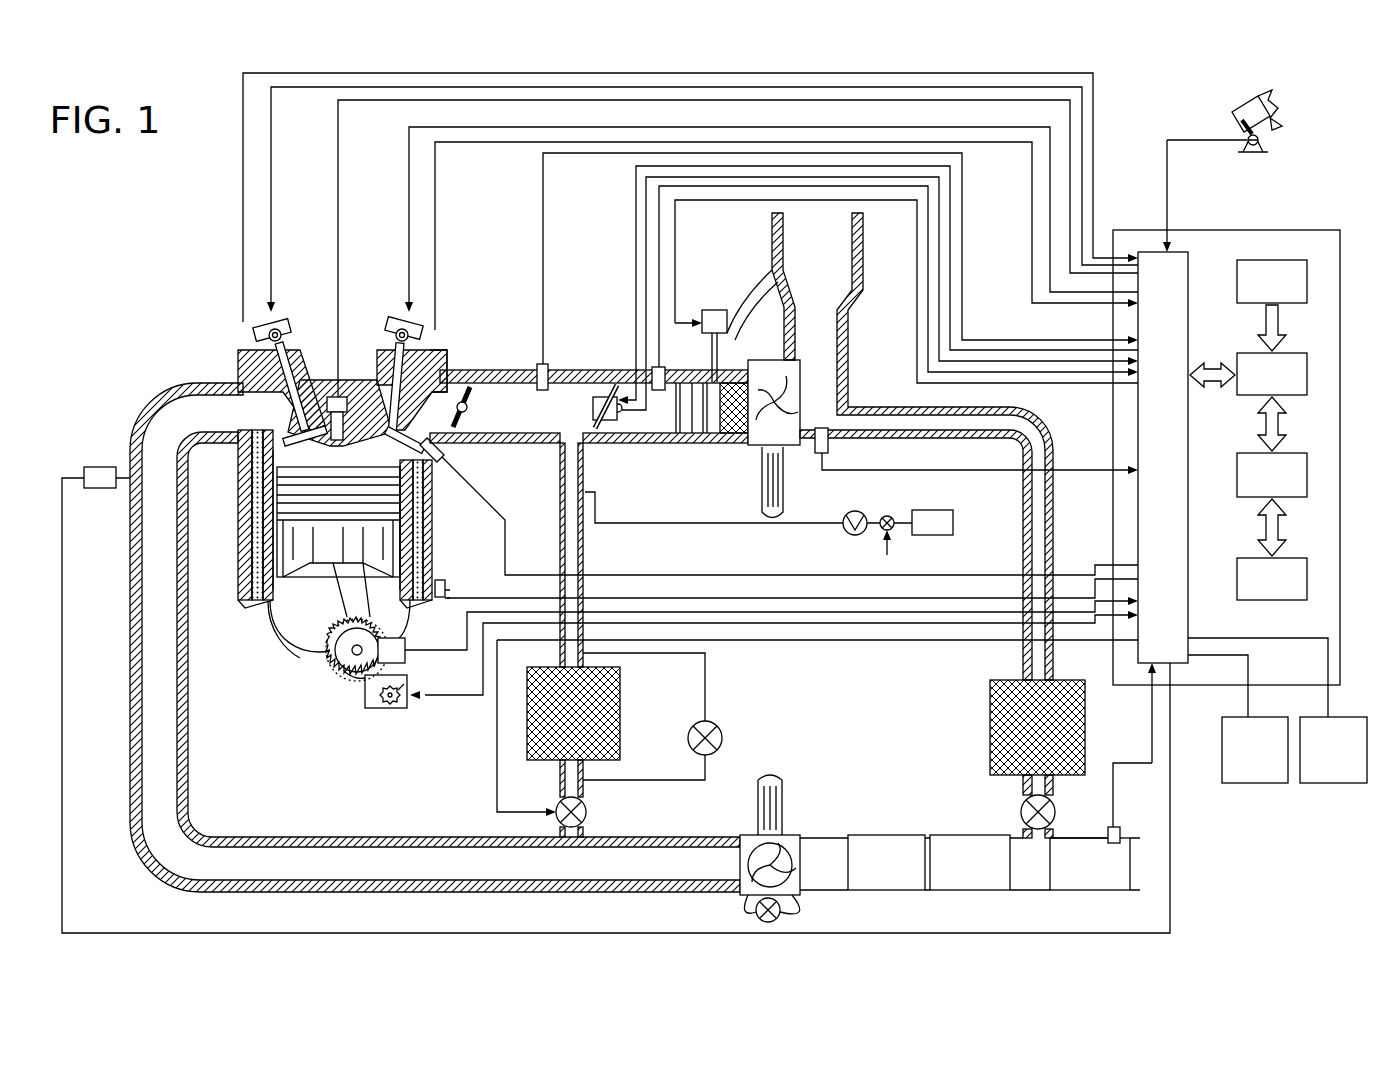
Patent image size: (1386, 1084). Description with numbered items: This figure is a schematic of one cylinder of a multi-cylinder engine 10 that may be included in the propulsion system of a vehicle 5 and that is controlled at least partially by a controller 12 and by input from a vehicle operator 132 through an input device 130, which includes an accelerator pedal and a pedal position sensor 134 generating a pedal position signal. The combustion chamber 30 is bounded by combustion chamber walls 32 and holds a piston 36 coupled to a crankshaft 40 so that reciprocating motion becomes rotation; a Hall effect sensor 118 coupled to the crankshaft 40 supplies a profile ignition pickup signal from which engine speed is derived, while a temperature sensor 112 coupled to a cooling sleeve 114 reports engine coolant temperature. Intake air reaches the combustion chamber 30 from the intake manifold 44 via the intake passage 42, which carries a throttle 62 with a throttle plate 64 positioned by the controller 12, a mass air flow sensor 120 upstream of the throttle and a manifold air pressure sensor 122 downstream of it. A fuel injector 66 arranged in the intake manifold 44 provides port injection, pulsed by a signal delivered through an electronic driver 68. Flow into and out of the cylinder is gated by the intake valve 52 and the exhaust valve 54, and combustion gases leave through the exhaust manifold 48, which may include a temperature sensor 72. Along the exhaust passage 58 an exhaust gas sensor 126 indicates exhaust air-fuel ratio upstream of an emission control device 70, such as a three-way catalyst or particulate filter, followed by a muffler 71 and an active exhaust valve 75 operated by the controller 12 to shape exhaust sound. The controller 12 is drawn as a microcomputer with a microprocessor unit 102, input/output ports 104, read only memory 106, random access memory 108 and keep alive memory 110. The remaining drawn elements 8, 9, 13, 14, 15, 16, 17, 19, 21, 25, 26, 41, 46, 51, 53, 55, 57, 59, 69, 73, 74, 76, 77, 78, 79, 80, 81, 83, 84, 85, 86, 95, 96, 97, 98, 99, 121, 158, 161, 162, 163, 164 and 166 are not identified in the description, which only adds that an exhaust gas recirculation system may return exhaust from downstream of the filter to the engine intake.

The vehicle 5 is at (558, 370).
The sensors 8 is at (1333, 750).
The throttle body 9 is at (612, 282).
The engine 10 is at (170, 296).
The controller 12 is at (1318, 230).
The cylinder head 13 is at (440, 350).
The cylinder walls 14 is at (240, 470).
The electric machine 15 is at (730, 380).
The charge air cooler 16 is at (684, 440).
The conduit wall 17 is at (800, 385).
The compressor wheel 19 is at (780, 404).
The pump 21 is at (862, 514).
The valve 25 is at (880, 542).
The reservoir 26 is at (922, 533).
The combustion chamber 30 is at (270, 520).
The combustion chamber walls 32 is at (283, 605).
The piston 36 is at (320, 580).
The crankshaft 40 is at (345, 672).
The spark plug 41 is at (458, 430).
The intake passage 42 is at (803, 290).
The intake manifold 44 is at (565, 407).
The intake passage 46 is at (646, 419).
The exhaust manifold 48 is at (222, 425).
The valve actuator 51 is at (402, 328).
The intake valve 52 is at (400, 432).
The valve actuator 53 is at (282, 330).
The exhaust valve 54 is at (270, 395).
The valve guide 55 is at (430, 352).
The rocker arm 57 is at (258, 330).
The exhaust passage 58 is at (285, 340).
The rocker arm 59 is at (398, 328).
The throttle 62 is at (606, 392).
The throttle plate 64 is at (612, 392).
The fuel injector 66 is at (335, 400).
The electronic driver 68 is at (440, 470).
The actuators 69 is at (1255, 750).
The emission control device 70 is at (1114, 826).
The muffler 71 is at (862, 862).
The temperature sensor 72 is at (967, 862).
The muffler 73 is at (1075, 864).
The emission control device 74 is at (1088, 732).
The active exhaust valve 75 is at (948, 760).
The valve 76 is at (1056, 808).
The conduit 77 is at (1035, 515).
The blower housing 78 is at (795, 835).
The bypass valve 79 is at (795, 910).
The EGR valve 80 is at (558, 802).
The EGR passage 81 is at (562, 465).
The EGR system 83 is at (472, 785).
The compressor inlet 84 is at (750, 360).
The catalyst 85 is at (620, 704).
The bypass valve 86 is at (690, 728).
The gear shaft 95 is at (396, 710).
The starter motor 96 is at (407, 708).
The ring gear 97 is at (333, 652).
The pinion gear 98 is at (383, 706).
The gear teeth 99 is at (355, 685).
The microprocessor unit 102 is at (1308, 374).
The input/output ports 104 is at (1192, 260).
The read only memory 106 is at (1308, 285).
The random access memory 108 is at (1308, 476).
The keep alive memory 110 is at (1308, 576).
The temperature sensor 112 is at (445, 585).
The cooling sleeve 114 is at (254, 514).
The Hall effect sensor 118 is at (405, 640).
The mass air flow sensor 120 is at (830, 448).
The pressure sensor 121 is at (537, 368).
The manifold air pressure sensor 122 is at (660, 368).
The exhaust gas sensor 126 is at (84, 476).
The input device 130 is at (1240, 118).
The vehicle operator 132 is at (1285, 112).
The pedal position sensor 134 is at (1265, 145).
The motor controller 158 is at (706, 310).
The conduit 161 is at (762, 513).
The compressor 162 is at (748, 445).
The cooler tubes 163 is at (695, 438).
The blower inlet 164 is at (745, 835).
The blower 166 is at (792, 866).